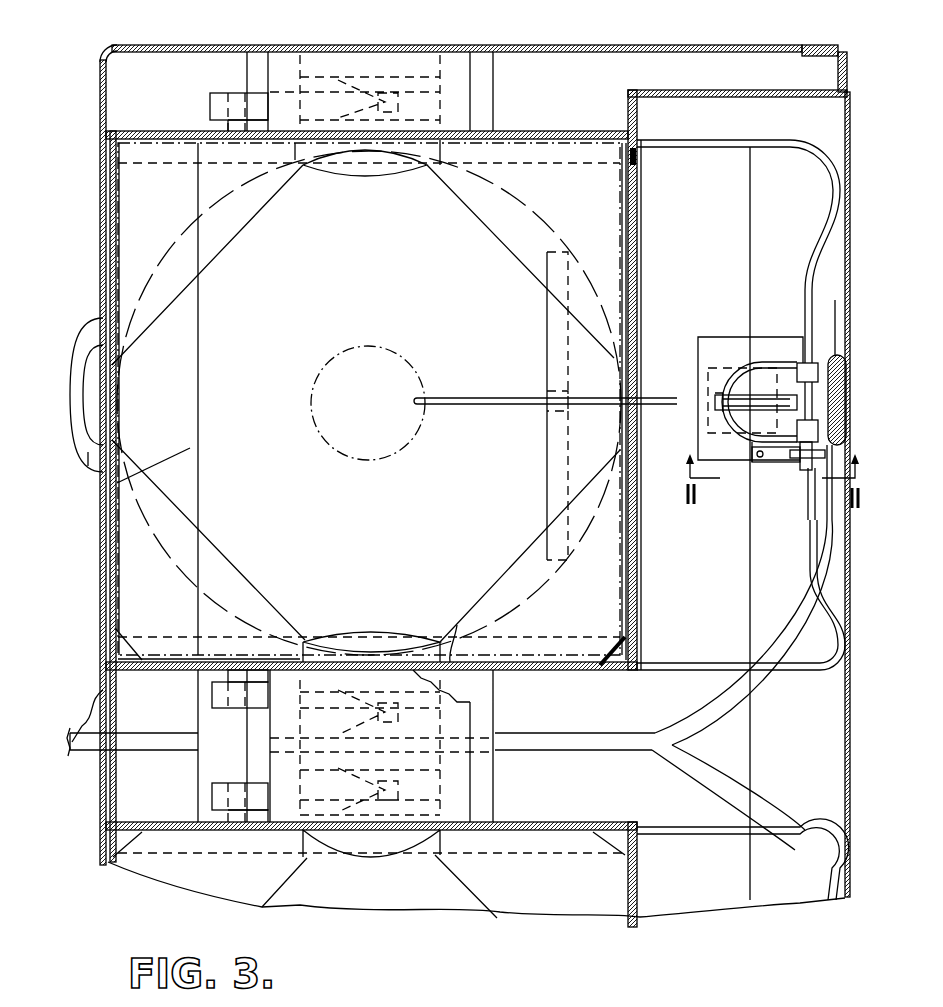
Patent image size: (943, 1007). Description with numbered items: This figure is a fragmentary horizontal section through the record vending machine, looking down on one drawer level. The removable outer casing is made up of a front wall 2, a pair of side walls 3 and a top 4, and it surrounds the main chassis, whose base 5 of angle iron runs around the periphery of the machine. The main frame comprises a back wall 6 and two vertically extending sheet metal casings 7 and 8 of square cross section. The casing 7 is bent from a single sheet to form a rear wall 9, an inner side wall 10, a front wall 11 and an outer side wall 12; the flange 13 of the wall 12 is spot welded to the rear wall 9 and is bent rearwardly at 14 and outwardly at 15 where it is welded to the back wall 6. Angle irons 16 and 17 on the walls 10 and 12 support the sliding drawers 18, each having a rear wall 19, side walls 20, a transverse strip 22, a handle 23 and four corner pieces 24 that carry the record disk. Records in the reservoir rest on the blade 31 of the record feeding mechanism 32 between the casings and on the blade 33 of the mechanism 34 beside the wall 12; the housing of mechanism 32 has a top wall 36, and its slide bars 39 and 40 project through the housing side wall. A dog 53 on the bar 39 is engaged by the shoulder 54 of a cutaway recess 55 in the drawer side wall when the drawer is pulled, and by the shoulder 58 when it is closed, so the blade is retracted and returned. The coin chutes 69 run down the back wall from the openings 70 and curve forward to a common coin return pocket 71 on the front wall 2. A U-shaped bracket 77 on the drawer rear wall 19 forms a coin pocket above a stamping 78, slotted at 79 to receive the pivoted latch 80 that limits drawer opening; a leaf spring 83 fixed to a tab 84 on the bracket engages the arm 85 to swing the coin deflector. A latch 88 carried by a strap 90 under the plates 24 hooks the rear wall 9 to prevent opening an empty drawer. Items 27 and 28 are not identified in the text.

The front wall 2 is at (103, 560).
The side walls 3 is at (431, 45).
The top 4 is at (822, 488).
The base 5 is at (688, 140).
The back wall 6 is at (852, 64).
The sheet metal casing 7 is at (639, 300).
The sheet metal casing 8 is at (645, 896).
The rear wall 9 is at (640, 353).
The inner side wall 10 is at (572, 670).
The front wall 11 is at (120, 620).
The outer side wall 12 is at (200, 172).
The flange 13 is at (630, 109).
The rearward bend 14 is at (722, 97).
The outward bend 15 is at (840, 66).
The angle irons 16 is at (640, 634).
The angle irons 17 is at (635, 159).
The drawers 18 is at (134, 582).
The rear wall 19 is at (809, 276).
The side walls 20 is at (580, 142).
The transverse strip 22 is at (638, 237).
The handles 23 is at (92, 474).
The sheet metal pieces 24 is at (240, 226).
The liner strip 27 is at (120, 602).
The brace rod 28 is at (120, 478).
The blade 31 is at (322, 640).
The record feeding mechanism 32 is at (480, 733).
The blade 33 is at (380, 169).
The record feeding mechanism 34 is at (466, 96).
The top wall 36 is at (440, 770).
The slide bar 39 is at (258, 706).
The slide bar 40 is at (258, 784).
The dog 53 is at (224, 676).
The shoulder 54 is at (458, 662).
The cutaway recess 55 is at (456, 640).
The shoulder 58 is at (215, 656).
The coin chutes 69 is at (166, 734).
The opening 70 is at (672, 760).
The coin return pocket 71 is at (84, 706).
The U-shaped bracket 77 is at (745, 372).
The metal stamping 78 is at (707, 456).
The slot 79 is at (790, 394).
The pivoted latch 80 is at (796, 366).
The leaf spring 83 is at (791, 467).
The tab 84 is at (751, 465).
The arm 85 is at (823, 473).
The latch 88 is at (585, 406).
The strap 90 is at (548, 456).